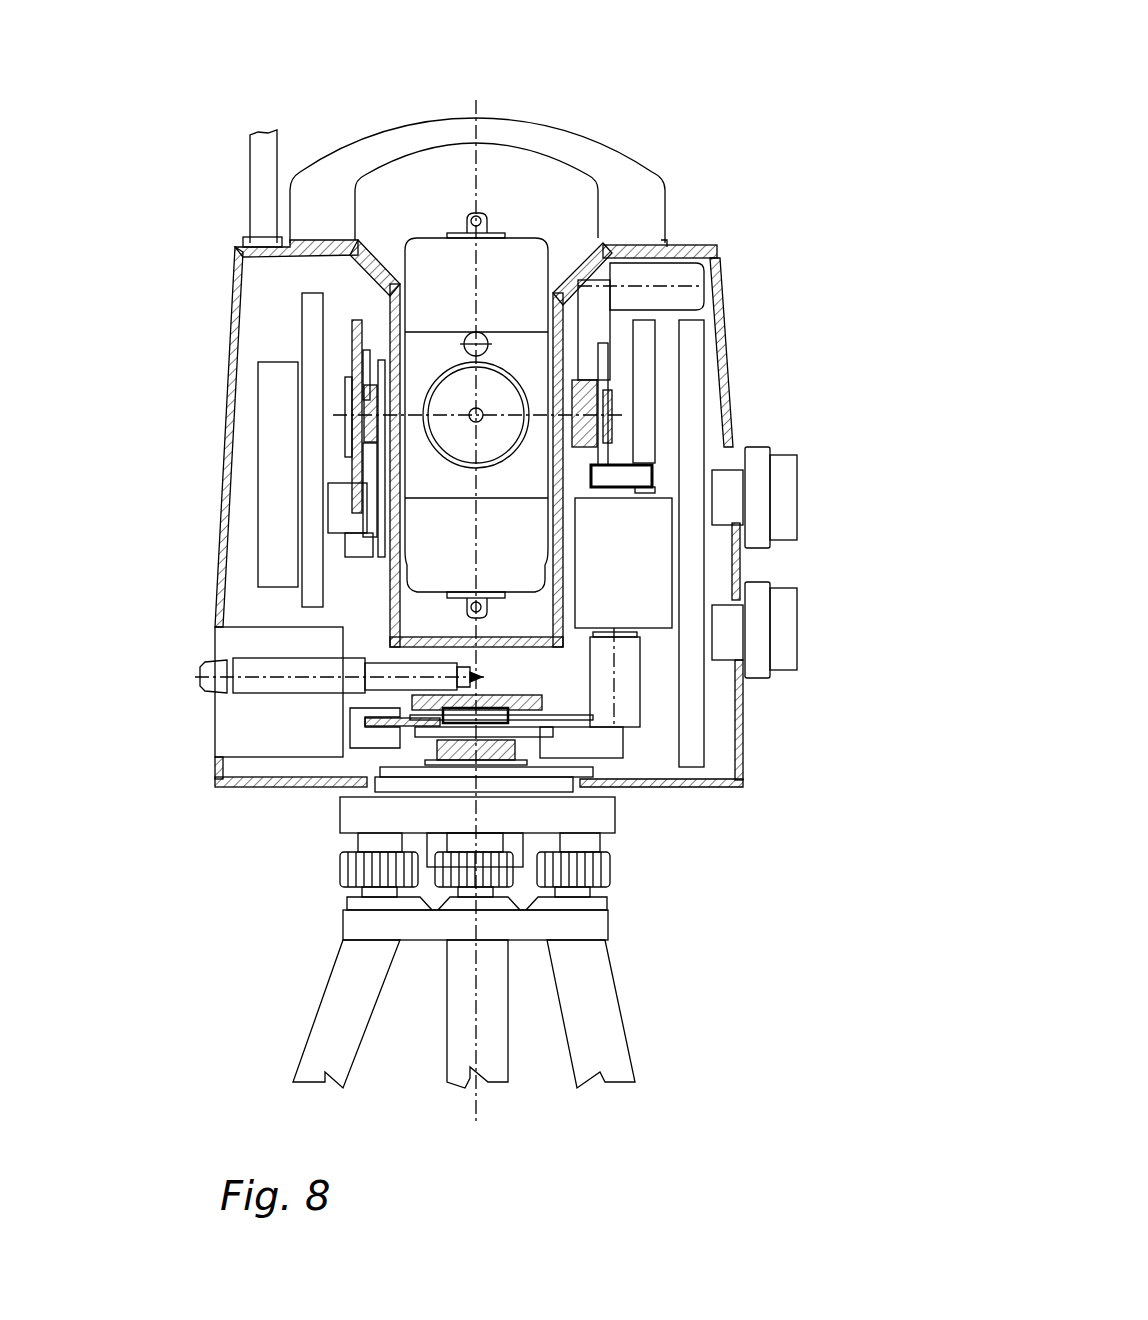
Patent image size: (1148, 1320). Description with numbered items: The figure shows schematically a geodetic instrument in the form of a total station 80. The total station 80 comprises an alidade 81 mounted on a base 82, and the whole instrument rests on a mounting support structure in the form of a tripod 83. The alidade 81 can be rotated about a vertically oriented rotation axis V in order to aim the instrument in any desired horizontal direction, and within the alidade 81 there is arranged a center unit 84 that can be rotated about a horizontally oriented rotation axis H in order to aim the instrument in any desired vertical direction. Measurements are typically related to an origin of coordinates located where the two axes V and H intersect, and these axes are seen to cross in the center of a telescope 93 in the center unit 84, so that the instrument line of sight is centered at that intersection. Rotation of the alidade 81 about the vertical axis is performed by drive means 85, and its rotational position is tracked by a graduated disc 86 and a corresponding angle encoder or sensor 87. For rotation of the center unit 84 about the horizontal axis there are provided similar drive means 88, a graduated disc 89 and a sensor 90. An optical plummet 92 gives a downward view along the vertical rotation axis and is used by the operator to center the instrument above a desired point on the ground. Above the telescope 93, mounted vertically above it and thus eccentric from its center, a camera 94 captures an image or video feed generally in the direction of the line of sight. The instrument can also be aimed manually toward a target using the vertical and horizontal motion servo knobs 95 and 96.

The total station 80 is at (752, 156).
The alidade 81 is at (735, 798).
The base 82 is at (590, 818).
The tripod 83 is at (595, 990).
The center unit 84 is at (520, 277).
The drive means 85 is at (630, 703).
The graduated disc 86 is at (362, 737).
The angle encoder or sensor 87 is at (217, 773).
The drive means 88 is at (697, 268).
The graduated disc 89 is at (353, 470).
The sensor 90 is at (340, 520).
The optical plummet 92 is at (217, 668).
The telescope 93 is at (450, 393).
The camera 94 is at (387, 273).
The vertical motion servo knob 95 is at (785, 485).
The horizontal motion servo knob 96 is at (785, 620).
The horizontally oriented rotation axis H is at (618, 417).
The vertically oriented rotation axis V is at (476, 108).